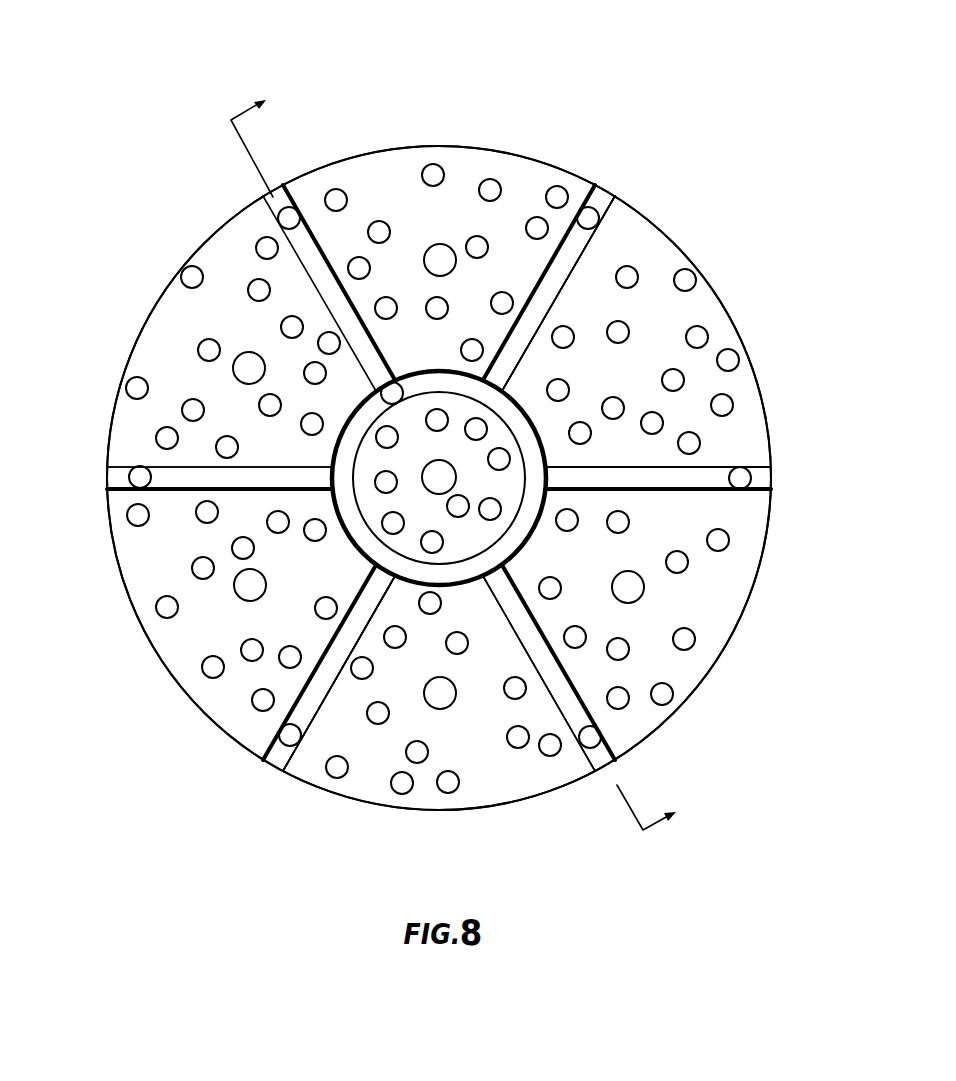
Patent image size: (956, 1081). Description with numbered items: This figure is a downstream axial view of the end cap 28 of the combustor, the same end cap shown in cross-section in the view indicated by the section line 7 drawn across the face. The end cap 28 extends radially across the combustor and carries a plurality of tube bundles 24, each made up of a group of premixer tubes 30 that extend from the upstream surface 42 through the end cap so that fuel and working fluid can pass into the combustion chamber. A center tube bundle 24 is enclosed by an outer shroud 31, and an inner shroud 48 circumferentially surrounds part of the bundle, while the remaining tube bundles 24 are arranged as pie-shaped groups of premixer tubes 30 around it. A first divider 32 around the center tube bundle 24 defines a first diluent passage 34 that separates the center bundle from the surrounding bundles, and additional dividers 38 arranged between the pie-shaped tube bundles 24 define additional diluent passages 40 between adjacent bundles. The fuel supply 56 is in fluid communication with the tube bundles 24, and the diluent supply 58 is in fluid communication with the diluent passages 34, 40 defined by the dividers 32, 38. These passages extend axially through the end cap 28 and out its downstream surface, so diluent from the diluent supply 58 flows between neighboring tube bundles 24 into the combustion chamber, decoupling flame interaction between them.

The section line 7- 7 is at (462, 456).
The tube bundle 24 is at (463, 540).
The end cap 28 is at (763, 367).
The premixer tube 30 is at (199, 348).
The outer shroud 31 is at (545, 273).
The first divider 32 is at (542, 540).
The first diluent passage 34 is at (218, 720).
The additional divider 38 is at (566, 308).
The additional diluent passage 40 is at (563, 262).
The upstream surface 42 is at (182, 552).
The inner shroud 48 is at (155, 466).
The fuel supply 56 is at (432, 462).
The diluent supply 58 is at (279, 220).